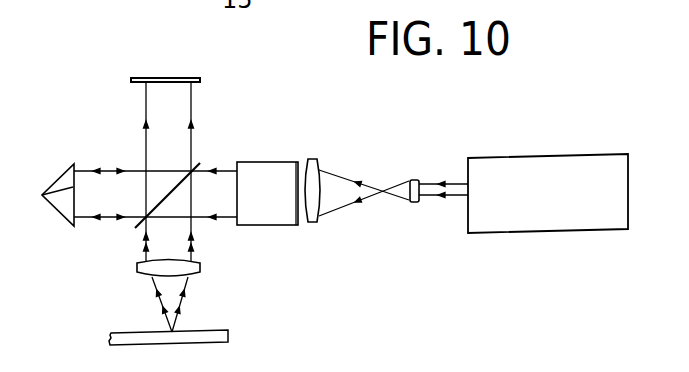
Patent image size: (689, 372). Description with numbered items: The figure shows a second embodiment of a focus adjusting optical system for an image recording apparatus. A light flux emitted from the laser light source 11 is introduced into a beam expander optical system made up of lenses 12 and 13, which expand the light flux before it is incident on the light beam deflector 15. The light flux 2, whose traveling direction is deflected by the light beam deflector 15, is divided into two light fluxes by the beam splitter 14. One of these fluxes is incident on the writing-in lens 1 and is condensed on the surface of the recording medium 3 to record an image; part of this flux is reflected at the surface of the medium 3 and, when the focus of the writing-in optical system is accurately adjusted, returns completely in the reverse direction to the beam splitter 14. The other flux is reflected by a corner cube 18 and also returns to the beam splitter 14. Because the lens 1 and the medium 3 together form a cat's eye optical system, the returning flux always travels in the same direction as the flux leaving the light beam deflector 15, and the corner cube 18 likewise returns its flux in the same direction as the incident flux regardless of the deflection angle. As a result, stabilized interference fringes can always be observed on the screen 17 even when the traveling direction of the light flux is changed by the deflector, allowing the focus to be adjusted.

The writing-in lens 1 is at (137, 268).
The light flux 2 is at (223, 208).
The recording medium 3 is at (225, 337).
The laser light source 11 is at (525, 220).
The lens 12 is at (413, 203).
The lens 13 is at (314, 222).
The beam splitter 14 is at (197, 164).
The light beam deflector 15 is at (271, 170).
The screen 17 is at (182, 78).
The corner cube 18 is at (63, 212).